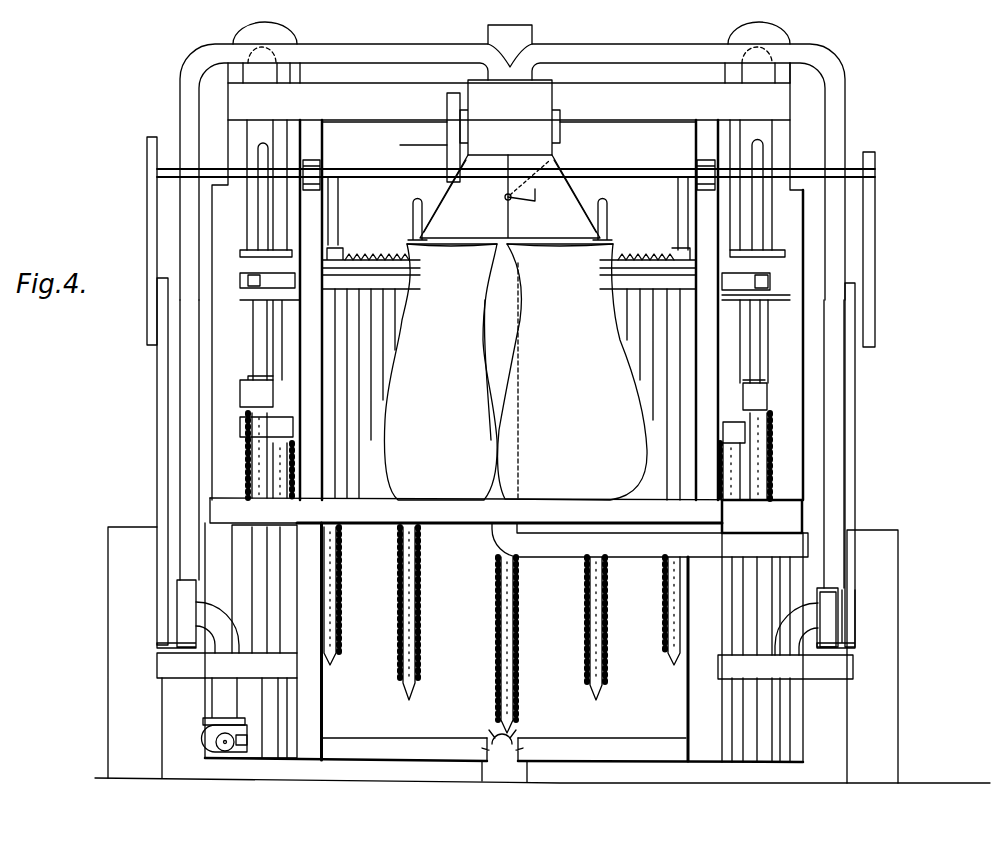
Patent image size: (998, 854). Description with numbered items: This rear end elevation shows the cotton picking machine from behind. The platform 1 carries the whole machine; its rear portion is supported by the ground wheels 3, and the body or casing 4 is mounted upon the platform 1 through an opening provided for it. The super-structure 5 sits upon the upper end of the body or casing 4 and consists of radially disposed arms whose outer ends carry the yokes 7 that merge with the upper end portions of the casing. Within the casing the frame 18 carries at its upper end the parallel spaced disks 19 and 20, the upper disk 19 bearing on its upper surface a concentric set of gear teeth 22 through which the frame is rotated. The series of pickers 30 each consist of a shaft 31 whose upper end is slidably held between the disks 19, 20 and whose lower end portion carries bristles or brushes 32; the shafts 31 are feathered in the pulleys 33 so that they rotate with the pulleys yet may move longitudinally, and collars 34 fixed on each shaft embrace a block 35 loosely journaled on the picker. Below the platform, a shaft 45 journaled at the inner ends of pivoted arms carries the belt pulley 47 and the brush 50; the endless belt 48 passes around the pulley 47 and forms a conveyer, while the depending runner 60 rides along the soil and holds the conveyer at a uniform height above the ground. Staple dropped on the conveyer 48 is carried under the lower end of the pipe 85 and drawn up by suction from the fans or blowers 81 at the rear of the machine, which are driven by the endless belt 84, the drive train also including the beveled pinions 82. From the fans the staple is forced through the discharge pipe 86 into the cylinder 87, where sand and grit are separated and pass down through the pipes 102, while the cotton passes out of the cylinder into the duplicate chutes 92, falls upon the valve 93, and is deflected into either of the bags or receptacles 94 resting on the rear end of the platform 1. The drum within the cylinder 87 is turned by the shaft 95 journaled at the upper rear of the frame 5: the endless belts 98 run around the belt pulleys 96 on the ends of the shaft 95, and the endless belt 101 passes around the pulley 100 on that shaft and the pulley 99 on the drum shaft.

The platform 1 is at (405, 498).
The ground wheels 3 is at (130, 572).
The body or casing 4 is at (509, 384).
The super-structure 5 is at (238, 135).
The yokes 7 is at (232, 72).
The frame 18 is at (232, 421).
The disk 19 is at (757, 266).
The disk 20 is at (757, 298).
The gear teeth 22 is at (634, 252).
The pickers 30 is at (247, 448).
The shaft 31 is at (262, 230).
The bristles or brushes 32 is at (245, 490).
The pulleys 33 is at (257, 278).
The collars 34 is at (253, 378).
The block 35 is at (440, 372).
The shaft 45 is at (203, 730).
The belt pulley 47 is at (243, 742).
The endless belt 48 is at (243, 737).
The brush 50 is at (517, 741).
The runner 60 is at (485, 768).
The fans or blowers 81 is at (828, 612).
The beveled pinions 82 is at (840, 617).
The endless belt 84 is at (853, 642).
The pipe 85 is at (227, 693).
The discharge pipe 86 is at (832, 493).
The cylinder 87 is at (510, 117).
The chutes 92 is at (565, 199).
The valve 93 is at (463, 199).
The bags or receptacles 94 is at (572, 372).
The shaft 95 is at (370, 169).
The belt pulleys 96 is at (148, 163).
The endless belts 98 is at (160, 490).
The pulley 99 is at (447, 95).
The pulley 100 is at (447, 186).
The endless belt 101 is at (450, 156).
The pipes 102 is at (640, 558).